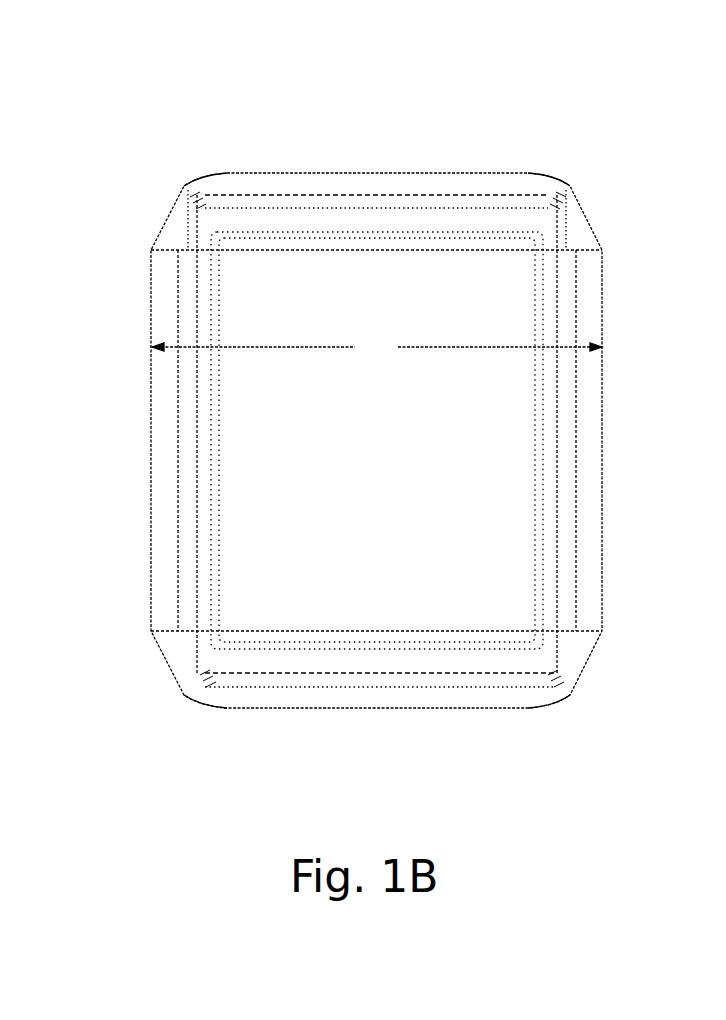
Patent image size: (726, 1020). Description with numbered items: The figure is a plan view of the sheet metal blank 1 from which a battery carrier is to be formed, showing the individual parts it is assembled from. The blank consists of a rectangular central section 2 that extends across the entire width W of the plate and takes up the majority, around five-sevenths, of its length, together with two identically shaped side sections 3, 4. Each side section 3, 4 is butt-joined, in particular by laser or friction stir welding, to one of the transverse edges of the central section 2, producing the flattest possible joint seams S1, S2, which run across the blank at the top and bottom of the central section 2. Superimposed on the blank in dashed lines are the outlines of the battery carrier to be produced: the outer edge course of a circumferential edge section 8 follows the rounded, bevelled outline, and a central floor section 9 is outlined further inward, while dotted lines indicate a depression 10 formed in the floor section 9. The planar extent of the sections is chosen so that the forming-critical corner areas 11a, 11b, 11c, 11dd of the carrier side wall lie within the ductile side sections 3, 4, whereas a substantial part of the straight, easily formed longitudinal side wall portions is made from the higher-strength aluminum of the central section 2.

The sheet metal blank 1 is at (181, 118).
The central section 2 is at (165, 427).
The side section 3 is at (288, 190).
The side section 4 is at (312, 710).
The circumferential edge section 8 is at (188, 512).
The central floor section 9 is at (555, 444).
The depression 10 is at (410, 447).
The corner area 11a is at (206, 671).
The corner area 11b is at (192, 198).
The corner area 11c is at (552, 201).
The corner area 11dd is at (558, 673).
The joint seam S1 is at (158, 251).
The joint seam S2 is at (165, 632).
The width W is at (377, 349).